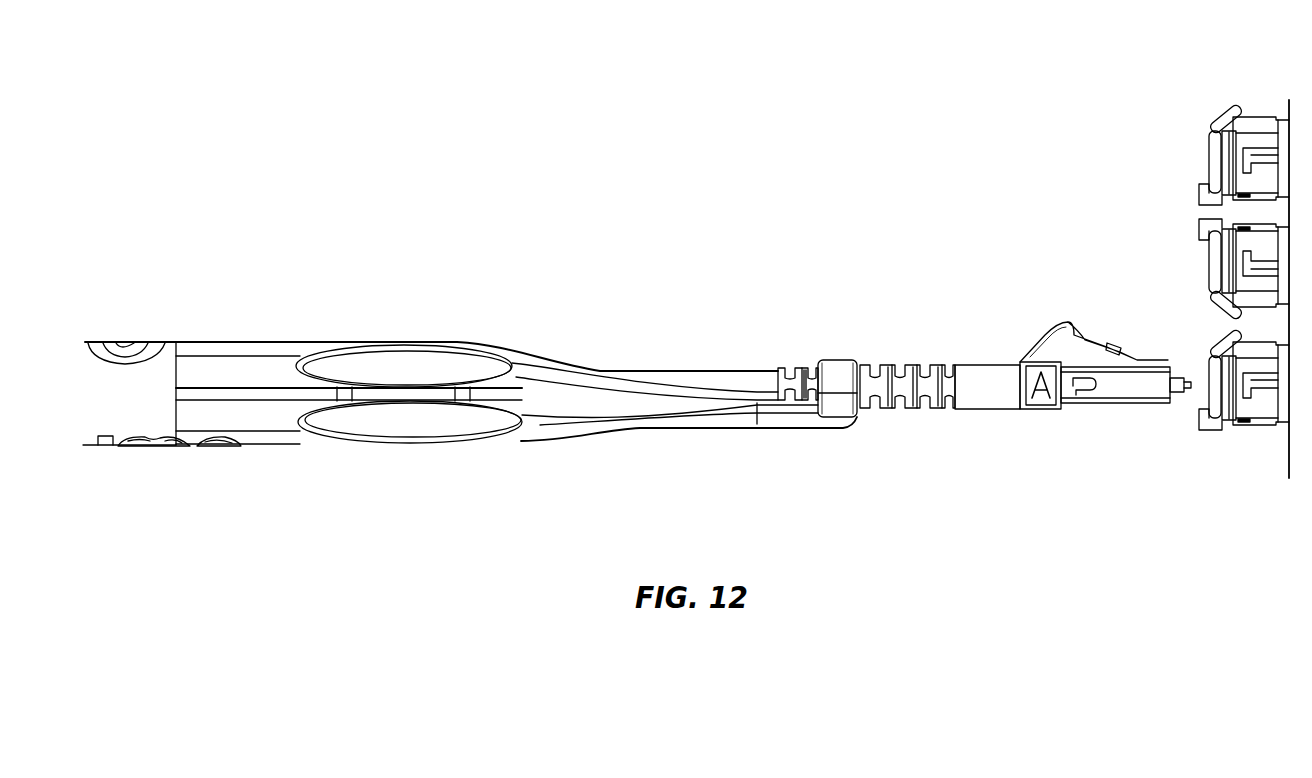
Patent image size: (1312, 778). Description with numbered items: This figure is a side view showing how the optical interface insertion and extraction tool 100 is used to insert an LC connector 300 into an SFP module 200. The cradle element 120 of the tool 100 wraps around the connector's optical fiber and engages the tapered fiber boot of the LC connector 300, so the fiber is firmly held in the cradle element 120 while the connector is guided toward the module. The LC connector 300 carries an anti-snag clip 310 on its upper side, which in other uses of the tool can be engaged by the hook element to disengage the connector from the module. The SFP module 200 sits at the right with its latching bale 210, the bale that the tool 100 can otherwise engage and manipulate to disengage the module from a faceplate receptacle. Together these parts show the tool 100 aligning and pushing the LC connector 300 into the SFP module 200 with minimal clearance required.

The optical interface insertion and extraction tool 100 is at (424, 444).
The cradle element 120 is at (832, 420).
The SFP module 200 is at (1243, 423).
The latching bale 210 is at (1212, 330).
The LC connector 300 is at (1042, 408).
The anti-snag clip 310 is at (1050, 325).